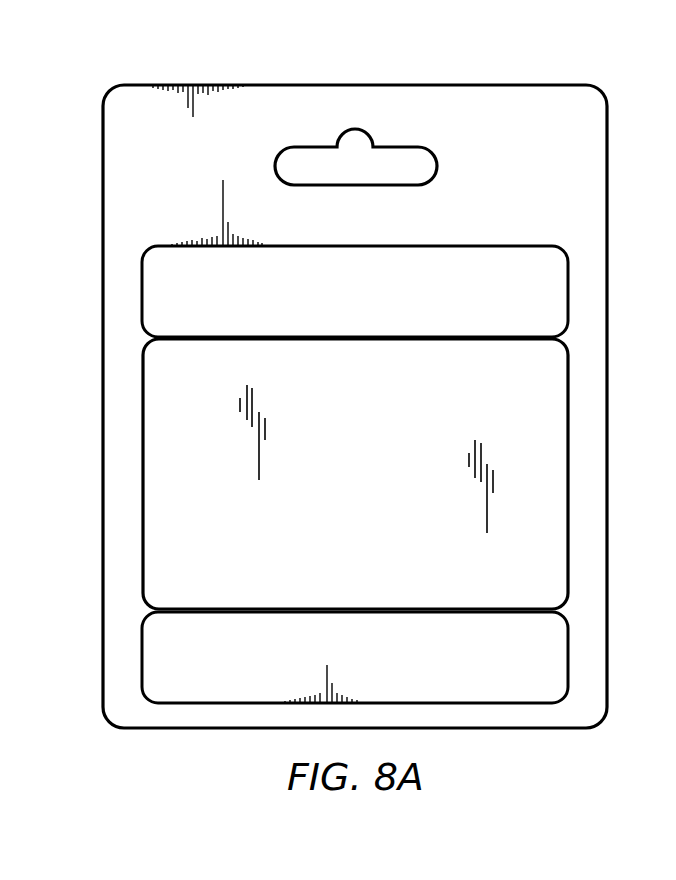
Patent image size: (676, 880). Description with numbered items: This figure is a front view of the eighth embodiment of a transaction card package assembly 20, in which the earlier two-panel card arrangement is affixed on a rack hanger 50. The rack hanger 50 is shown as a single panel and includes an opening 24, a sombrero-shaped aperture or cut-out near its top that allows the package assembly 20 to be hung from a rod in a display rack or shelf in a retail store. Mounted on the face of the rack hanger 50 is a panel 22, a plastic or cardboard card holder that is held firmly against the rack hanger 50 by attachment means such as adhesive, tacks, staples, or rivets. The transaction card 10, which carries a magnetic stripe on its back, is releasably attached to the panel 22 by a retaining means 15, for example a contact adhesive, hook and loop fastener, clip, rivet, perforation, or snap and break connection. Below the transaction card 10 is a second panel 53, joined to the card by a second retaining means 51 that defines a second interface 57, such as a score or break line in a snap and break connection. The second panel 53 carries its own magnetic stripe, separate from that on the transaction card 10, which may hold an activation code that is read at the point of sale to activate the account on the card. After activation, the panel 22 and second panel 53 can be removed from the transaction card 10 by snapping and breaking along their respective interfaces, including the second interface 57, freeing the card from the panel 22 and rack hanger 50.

The transaction card package assembly 20 is at (110, 62).
The rack hanger 50 is at (585, 211).
The opening 24 is at (354, 141).
The panel 22 is at (397, 263).
The transaction card 10 is at (400, 458).
The retaining means 15 is at (215, 337).
The second panel 53 is at (568, 657).
The second retaining means 51 is at (372, 612).
The second interface 57 is at (458, 611).